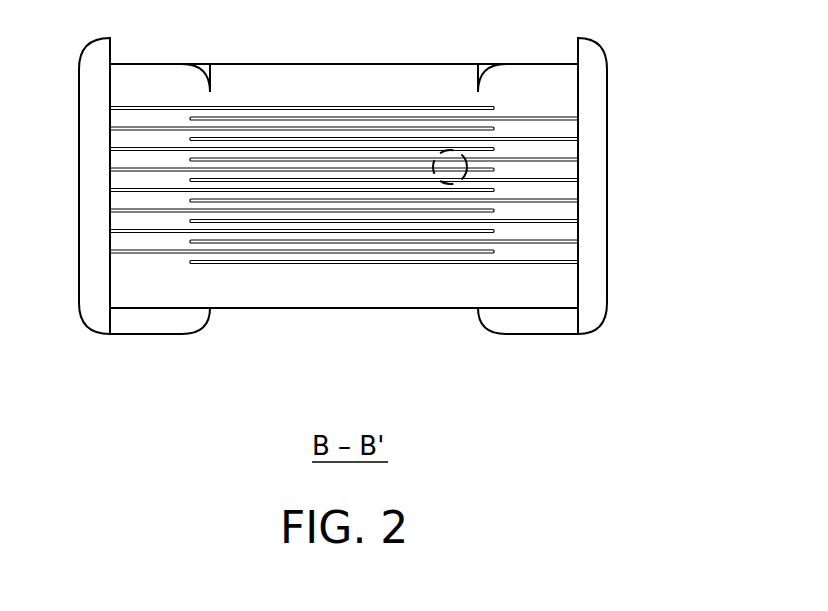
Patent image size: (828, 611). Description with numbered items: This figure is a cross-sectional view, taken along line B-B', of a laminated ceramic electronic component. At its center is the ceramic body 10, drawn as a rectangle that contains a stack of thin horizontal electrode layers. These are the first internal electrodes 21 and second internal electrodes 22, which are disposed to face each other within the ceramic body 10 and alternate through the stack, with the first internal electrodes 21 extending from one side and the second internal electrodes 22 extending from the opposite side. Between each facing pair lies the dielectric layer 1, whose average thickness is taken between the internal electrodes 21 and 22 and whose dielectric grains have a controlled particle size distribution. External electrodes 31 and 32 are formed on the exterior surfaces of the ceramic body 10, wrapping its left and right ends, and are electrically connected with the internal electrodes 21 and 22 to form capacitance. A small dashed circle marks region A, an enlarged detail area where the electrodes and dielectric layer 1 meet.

The dielectric layer 1 is at (375, 226).
The ceramic body 10 is at (345, 308).
The first internal electrode 21 is at (537, 158).
The second internal electrode 22 is at (485, 172).
The external electrode 31 is at (133, 320).
The external electrode 32 is at (545, 320).
The enlarged detail region A is at (441, 151).